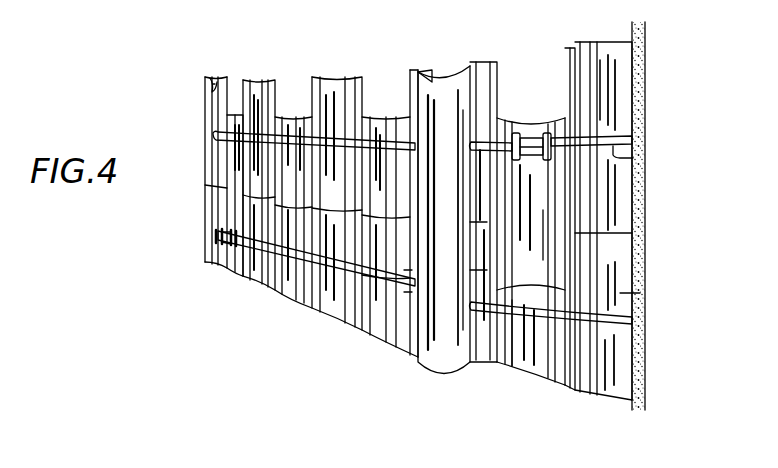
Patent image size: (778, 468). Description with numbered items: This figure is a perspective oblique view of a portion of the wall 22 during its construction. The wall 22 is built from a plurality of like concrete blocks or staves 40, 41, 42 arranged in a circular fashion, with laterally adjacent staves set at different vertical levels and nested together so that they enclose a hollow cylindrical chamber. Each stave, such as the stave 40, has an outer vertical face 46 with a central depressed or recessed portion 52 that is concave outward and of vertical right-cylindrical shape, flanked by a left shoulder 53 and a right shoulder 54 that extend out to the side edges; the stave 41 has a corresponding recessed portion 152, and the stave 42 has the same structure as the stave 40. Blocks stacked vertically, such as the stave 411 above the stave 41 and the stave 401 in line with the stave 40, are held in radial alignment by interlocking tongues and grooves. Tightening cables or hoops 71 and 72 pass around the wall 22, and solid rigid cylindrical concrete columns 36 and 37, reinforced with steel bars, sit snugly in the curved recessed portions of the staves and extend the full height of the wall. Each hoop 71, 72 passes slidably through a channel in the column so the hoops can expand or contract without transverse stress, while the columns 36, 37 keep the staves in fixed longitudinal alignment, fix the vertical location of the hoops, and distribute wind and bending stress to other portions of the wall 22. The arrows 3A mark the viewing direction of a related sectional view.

The wall 22 is at (380, 338).
The cylindrical column 36 is at (448, 85).
The cylindrical column 37 is at (213, 80).
The concrete stave 40 is at (545, 218).
The concrete stave 41 is at (620, 202).
The concrete stave 42 is at (476, 66).
The outer vertical face 46 is at (566, 70).
The central recessed portion 52 is at (520, 130).
The left shoulder 53 is at (495, 126).
The right shoulder 54 is at (566, 118).
The tightening cable 71 is at (633, 158).
The tightening cable 72 is at (613, 312).
The central recessed portion 152 is at (625, 102).
The concrete stave 401 is at (548, 372).
The concrete stave 411 is at (625, 396).
The section line 3A is at (452, 112).